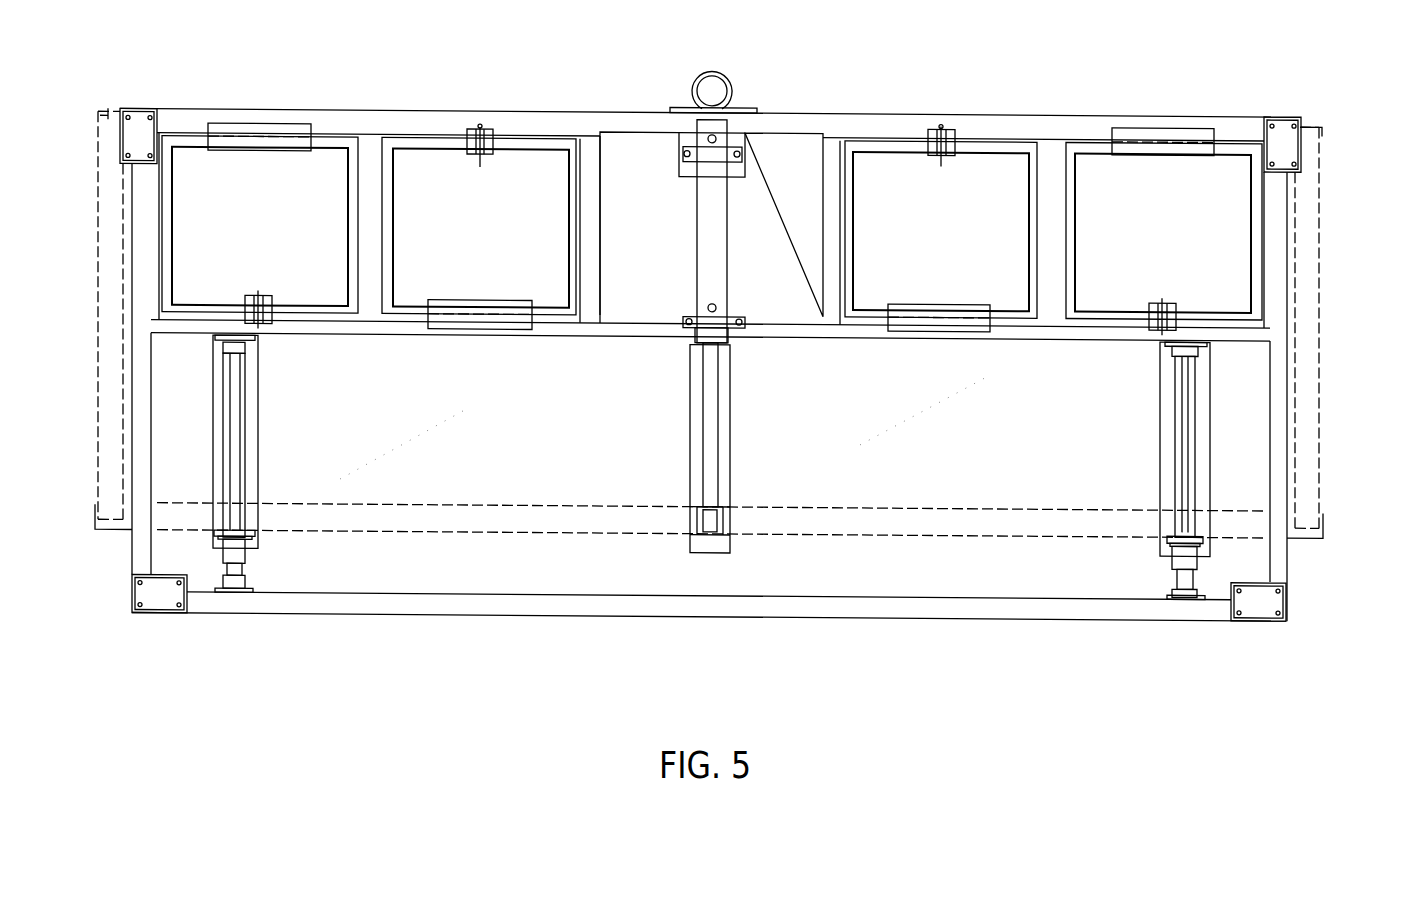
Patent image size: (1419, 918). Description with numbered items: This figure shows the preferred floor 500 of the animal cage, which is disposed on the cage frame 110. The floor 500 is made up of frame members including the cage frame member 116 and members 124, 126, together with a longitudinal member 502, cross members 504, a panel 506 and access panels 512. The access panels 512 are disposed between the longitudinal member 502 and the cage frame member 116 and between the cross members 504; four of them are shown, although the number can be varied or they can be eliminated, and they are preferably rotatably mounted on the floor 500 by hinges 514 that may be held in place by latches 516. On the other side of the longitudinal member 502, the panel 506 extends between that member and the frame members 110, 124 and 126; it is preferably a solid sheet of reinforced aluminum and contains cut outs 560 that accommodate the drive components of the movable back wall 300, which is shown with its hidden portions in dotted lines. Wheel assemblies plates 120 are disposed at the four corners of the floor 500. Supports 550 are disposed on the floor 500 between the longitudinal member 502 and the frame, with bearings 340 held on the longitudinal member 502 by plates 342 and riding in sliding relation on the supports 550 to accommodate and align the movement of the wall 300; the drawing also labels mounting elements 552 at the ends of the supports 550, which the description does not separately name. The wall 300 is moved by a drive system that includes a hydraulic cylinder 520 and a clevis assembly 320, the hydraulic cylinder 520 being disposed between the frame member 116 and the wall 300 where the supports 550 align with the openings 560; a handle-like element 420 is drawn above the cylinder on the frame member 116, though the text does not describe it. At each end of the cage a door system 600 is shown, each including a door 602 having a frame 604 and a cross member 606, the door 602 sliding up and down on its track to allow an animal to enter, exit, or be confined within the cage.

The frame 110 is at (975, 123).
The cage frame member 116 is at (208, 112).
The wheel assemblies plates 120 is at (142, 110).
The member 124 is at (137, 545).
The member 126 is at (1278, 546).
The movable back wall 300 is at (512, 508).
The clevis assembly 320 is at (710, 448).
The bearings 340 is at (243, 558).
The plates 342 is at (255, 531).
The handle 420 is at (723, 86).
The floor 500 is at (522, 634).
The longitudinal member 502 is at (838, 333).
The cross members 504 is at (366, 160).
The panel 506 is at (897, 468).
The access panels 512 is at (776, 225).
The hinges 514 is at (955, 302).
The latches 516 is at (955, 144).
The hydraulic cylinder 520 is at (730, 226).
The supports 550 is at (233, 487).
The mounting plate 552 is at (248, 338).
The cut outs 560 is at (258, 428).
The door system 600 is at (97, 308).
The door 602 is at (1312, 314).
The frame 604 is at (100, 425).
The cross member 606 is at (103, 112).